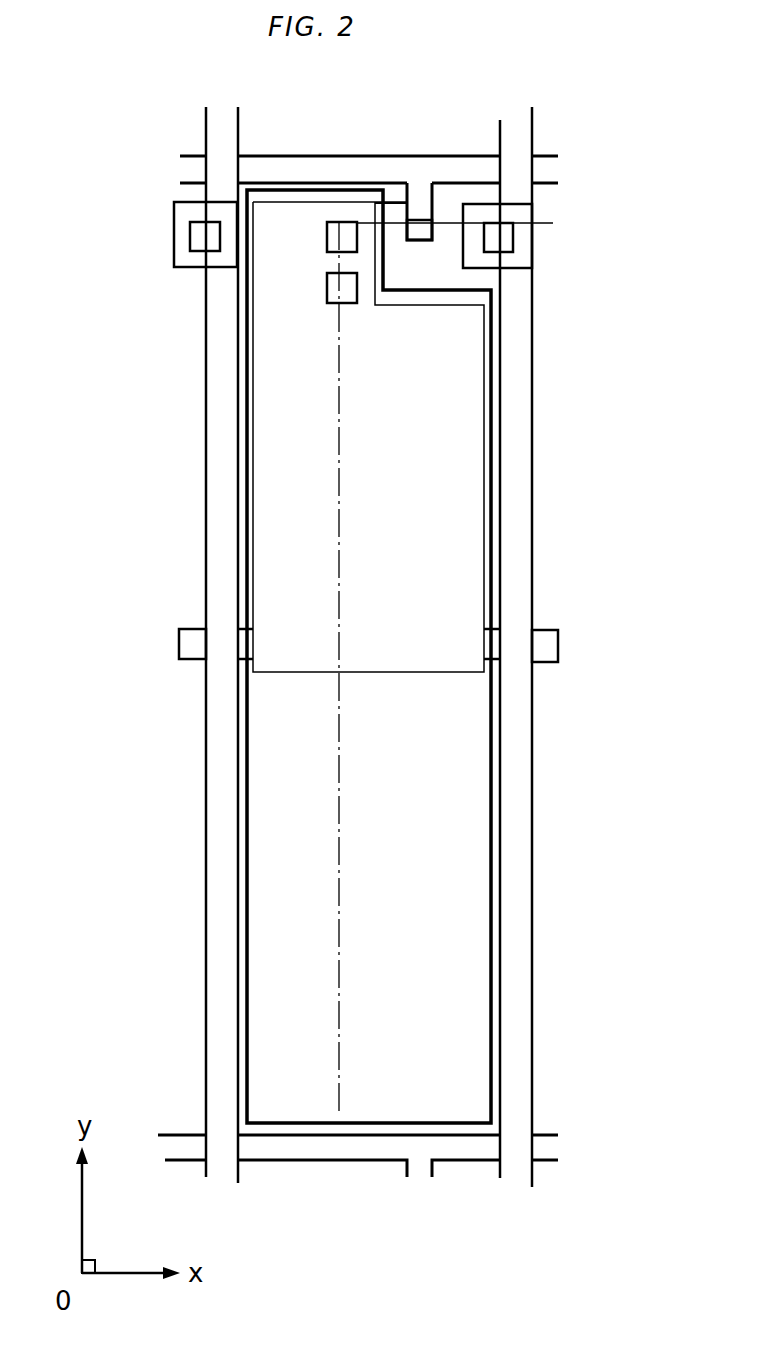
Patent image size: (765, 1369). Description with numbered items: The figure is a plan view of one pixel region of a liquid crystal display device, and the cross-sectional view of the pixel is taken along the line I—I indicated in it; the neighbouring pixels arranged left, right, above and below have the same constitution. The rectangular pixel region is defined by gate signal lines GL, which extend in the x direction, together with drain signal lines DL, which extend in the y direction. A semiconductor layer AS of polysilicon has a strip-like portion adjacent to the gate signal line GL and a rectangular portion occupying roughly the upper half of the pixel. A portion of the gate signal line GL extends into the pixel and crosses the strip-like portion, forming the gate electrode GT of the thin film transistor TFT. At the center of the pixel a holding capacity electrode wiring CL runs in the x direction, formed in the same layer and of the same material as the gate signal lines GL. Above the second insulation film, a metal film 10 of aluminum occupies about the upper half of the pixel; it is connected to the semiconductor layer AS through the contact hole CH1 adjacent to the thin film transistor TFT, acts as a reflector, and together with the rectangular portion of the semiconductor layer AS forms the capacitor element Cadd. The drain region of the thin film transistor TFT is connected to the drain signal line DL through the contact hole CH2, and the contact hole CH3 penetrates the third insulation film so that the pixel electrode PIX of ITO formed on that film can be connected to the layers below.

The gate signal line GL is at (552, 171).
The drain signal line DL is at (222, 1162).
The thin film transistor TFT is at (418, 206).
The semiconductor layer AS is at (444, 240).
The gate electrode GT is at (420, 236).
The contact hole CH1 is at (327, 235).
The contact hole CH2 is at (513, 237).
The contact hole CH3 is at (327, 290).
The capacitor element Cadd is at (262, 471).
The metal film 10 is at (490, 487).
The holding capacity electrode wiring CL is at (558, 645).
The pixel electrode PIX is at (490, 818).
The line I— I is at (547, 195).